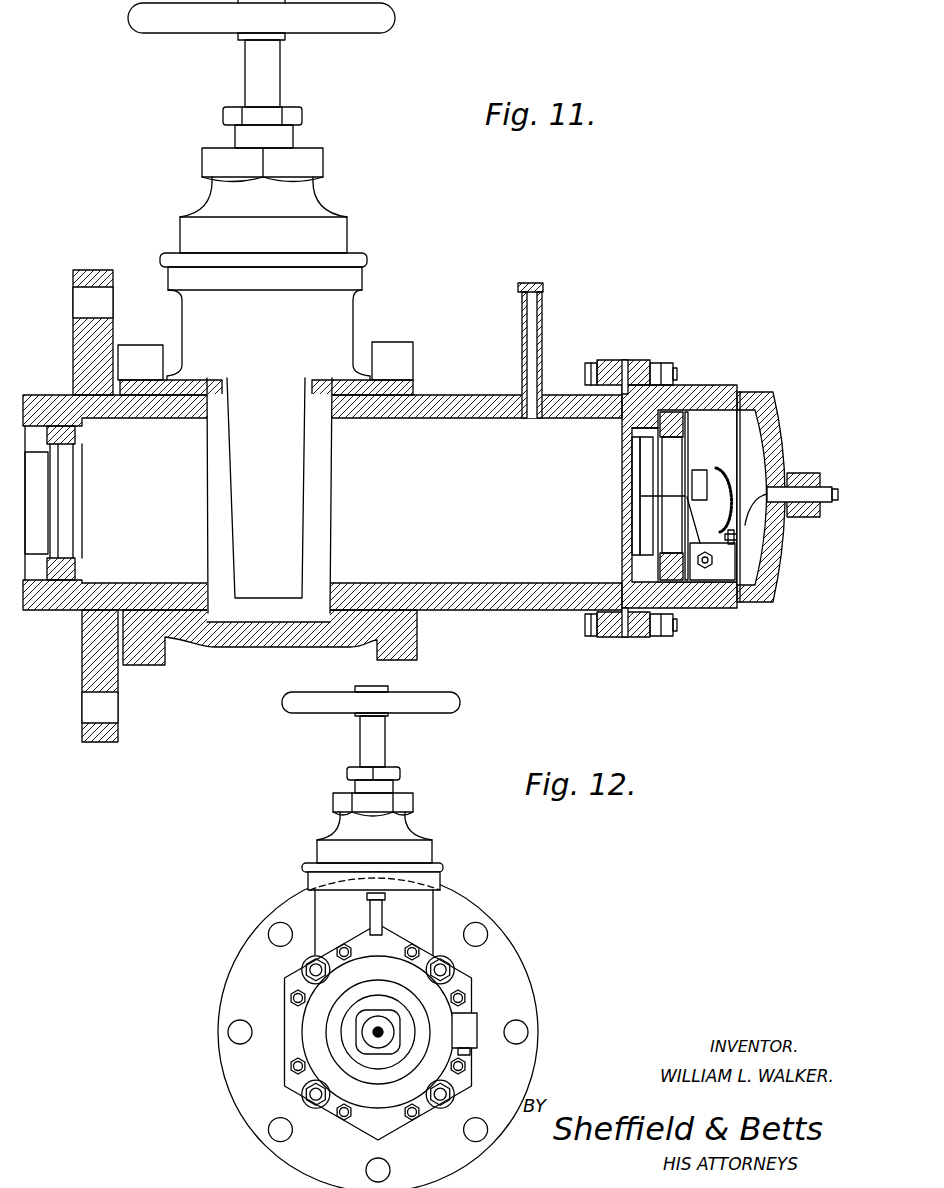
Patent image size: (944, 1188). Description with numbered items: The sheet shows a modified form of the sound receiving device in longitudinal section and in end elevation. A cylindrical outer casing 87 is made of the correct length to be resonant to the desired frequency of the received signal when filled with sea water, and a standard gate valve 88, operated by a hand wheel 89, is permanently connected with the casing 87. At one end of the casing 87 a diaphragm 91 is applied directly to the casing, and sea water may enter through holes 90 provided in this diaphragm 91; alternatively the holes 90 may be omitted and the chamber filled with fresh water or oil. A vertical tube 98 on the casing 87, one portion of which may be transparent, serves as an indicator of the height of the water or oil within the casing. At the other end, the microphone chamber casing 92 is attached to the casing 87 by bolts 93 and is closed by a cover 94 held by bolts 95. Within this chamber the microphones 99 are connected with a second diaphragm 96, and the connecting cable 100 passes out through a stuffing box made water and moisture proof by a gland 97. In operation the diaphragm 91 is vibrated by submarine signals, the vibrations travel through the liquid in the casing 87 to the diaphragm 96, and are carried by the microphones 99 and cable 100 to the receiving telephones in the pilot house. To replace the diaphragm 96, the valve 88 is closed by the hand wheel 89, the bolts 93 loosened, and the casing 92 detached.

In FIG. 11, the outer casing 87 is at (73, 365).
In FIG. 11, the valve 88 is at (355, 317).
In FIG. 11, the hand wheel 89 is at (337, 27).
In FIG. 12, the hand wheel 89 is at (318, 712).
In FIG. 11, the holes 90 is at (27, 460).
In FIG. 11, the diaphragm 91 is at (27, 500).
In FIG. 11, the microphone chamber casing 92 is at (740, 392).
In FIG. 11, the bolts 93 is at (623, 370).
In FIG. 12, the bolts 93 is at (303, 973).
In FIG. 11, the cover 94 is at (775, 413).
In FIG. 12, the cover 94 is at (313, 1050).
In FIG. 12, the bolts 95 is at (445, 1108).
In FIG. 11, the diaphragm 96 is at (638, 478).
In FIG. 11, the gland 97 is at (827, 460).
In FIG. 12, the gland 97 is at (394, 1043).
In FIG. 11, the vertical tube 98 is at (541, 323).
In FIG. 12, the vertical tube 98 is at (382, 918).
In FIG. 11, the microphones 99 is at (725, 457).
In FIG. 11, the cable 100 is at (832, 502).
In FIG. 12, the cable 100 is at (380, 1028).